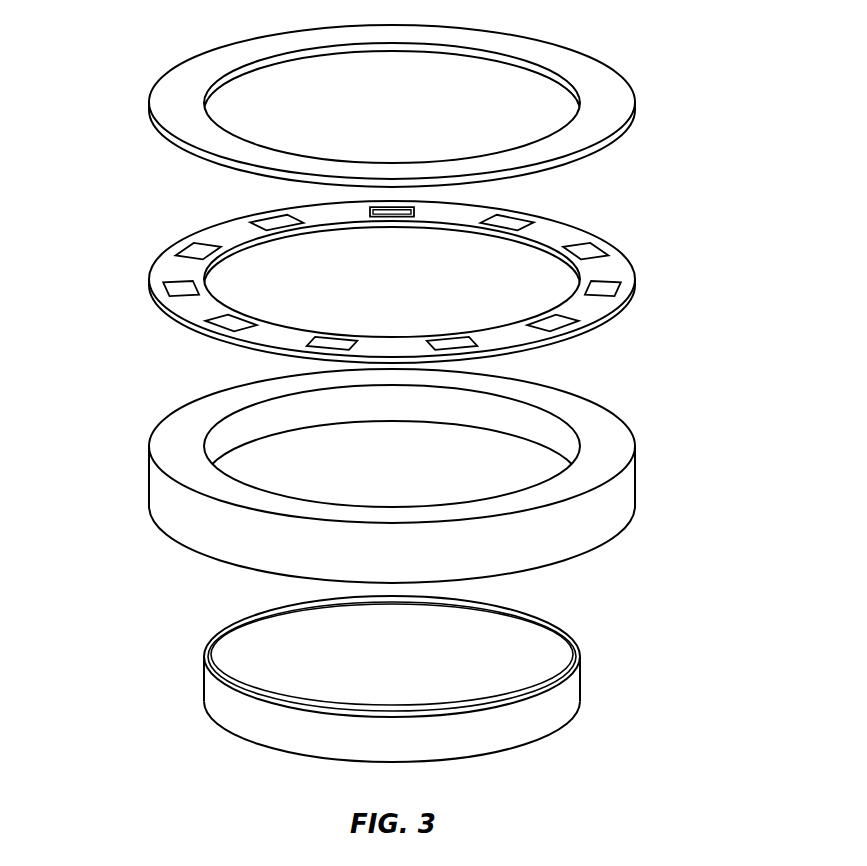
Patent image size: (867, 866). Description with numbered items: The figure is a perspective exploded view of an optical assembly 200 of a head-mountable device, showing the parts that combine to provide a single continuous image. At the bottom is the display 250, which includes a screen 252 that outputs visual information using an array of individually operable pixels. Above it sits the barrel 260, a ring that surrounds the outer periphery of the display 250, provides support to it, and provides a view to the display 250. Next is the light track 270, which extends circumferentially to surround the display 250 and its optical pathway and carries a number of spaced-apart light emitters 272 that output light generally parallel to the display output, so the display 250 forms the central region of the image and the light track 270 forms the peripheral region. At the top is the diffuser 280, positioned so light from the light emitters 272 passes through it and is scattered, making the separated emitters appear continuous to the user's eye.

The optical assembly 200 is at (128, 6).
The display 250 is at (433, 672).
The screen 252 is at (570, 654).
The barrel 260 is at (637, 497).
The light track 270 is at (438, 282).
The light emitters 272 is at (394, 214).
The diffuser 280 is at (637, 107).